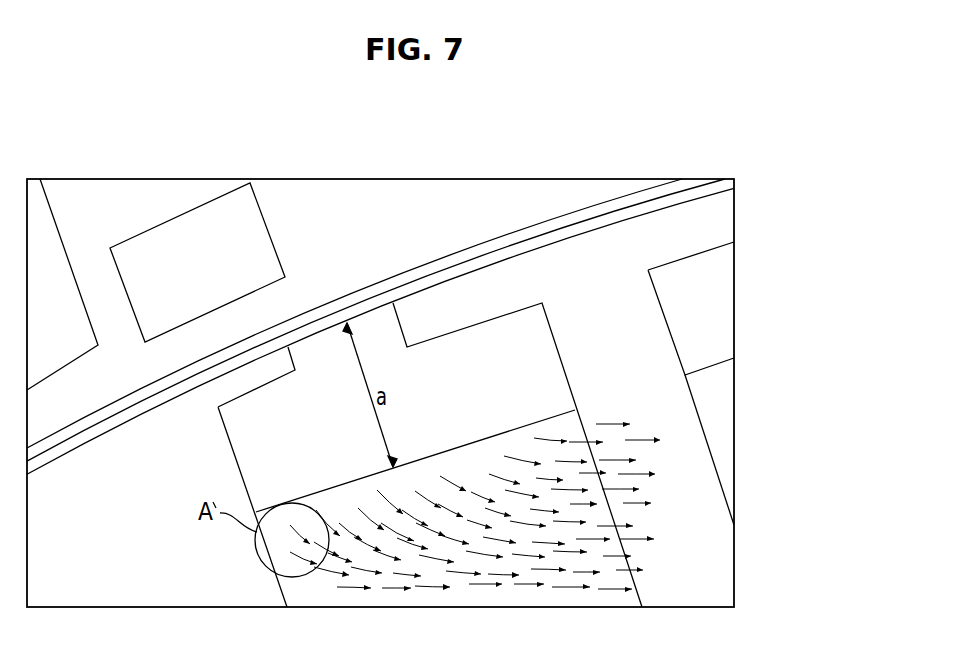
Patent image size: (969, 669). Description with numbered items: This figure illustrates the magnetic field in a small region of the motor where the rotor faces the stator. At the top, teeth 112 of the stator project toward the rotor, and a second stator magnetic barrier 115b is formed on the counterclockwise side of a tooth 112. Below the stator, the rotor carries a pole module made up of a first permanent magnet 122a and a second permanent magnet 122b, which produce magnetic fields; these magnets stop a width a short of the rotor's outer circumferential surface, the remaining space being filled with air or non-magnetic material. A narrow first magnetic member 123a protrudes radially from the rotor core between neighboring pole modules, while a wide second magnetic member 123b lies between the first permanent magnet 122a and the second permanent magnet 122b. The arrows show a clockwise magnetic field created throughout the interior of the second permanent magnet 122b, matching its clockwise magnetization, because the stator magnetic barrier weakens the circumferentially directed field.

The teeth 112 is at (126, 193).
The second stator magnetic barrier 115b is at (203, 223).
The first permanent magnet 122a is at (723, 405).
The first magnetic member 123a is at (705, 568).
The second permanent magnet 122b is at (450, 575).
The second magnetic member 123b is at (225, 565).